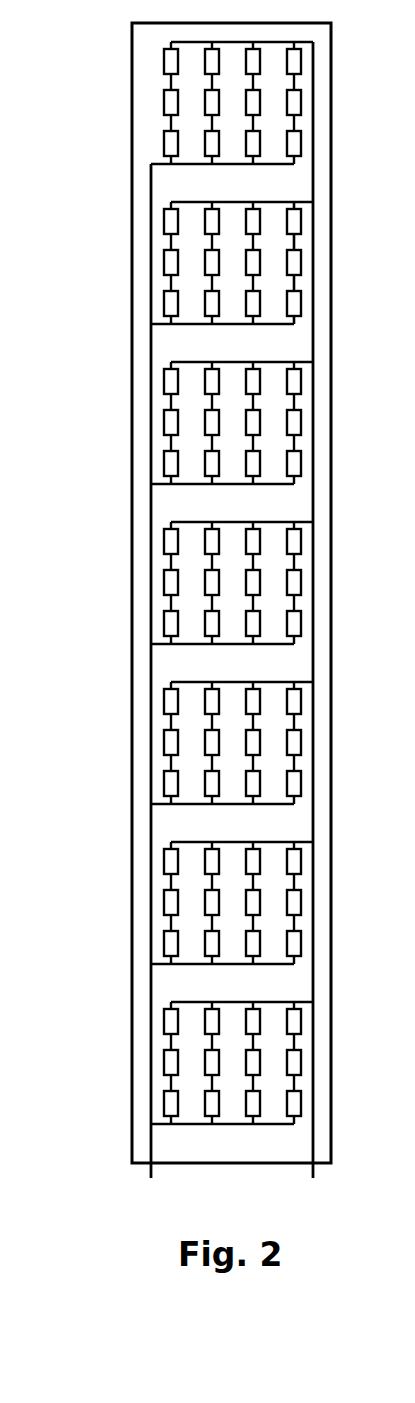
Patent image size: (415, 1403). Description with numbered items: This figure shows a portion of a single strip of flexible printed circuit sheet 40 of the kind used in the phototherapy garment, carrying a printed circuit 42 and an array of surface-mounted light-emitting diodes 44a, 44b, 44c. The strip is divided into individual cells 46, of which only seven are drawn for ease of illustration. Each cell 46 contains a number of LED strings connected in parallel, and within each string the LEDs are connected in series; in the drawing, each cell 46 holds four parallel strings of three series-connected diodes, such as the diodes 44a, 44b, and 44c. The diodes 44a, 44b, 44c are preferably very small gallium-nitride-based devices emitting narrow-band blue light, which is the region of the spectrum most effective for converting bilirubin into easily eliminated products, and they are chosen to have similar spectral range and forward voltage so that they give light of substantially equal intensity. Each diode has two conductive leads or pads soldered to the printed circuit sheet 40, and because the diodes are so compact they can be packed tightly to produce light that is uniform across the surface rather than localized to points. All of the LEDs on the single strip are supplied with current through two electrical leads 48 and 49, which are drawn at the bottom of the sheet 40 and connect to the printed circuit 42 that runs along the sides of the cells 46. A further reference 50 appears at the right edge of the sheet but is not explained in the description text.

The flexible printed circuit sheet 40 is at (115, 506).
The printed circuit 42 is at (150, 408).
The light-emitting diode 44a is at (301, 221).
The light-emitting diode 44b is at (301, 262).
The light-emitting diode 44c is at (301, 302).
The cell 46 is at (345, 352).
The electrical lead 48 is at (151, 1172).
The electrical lead 49 is at (313, 1172).
The partially visible reference 50 is at (410, 660).